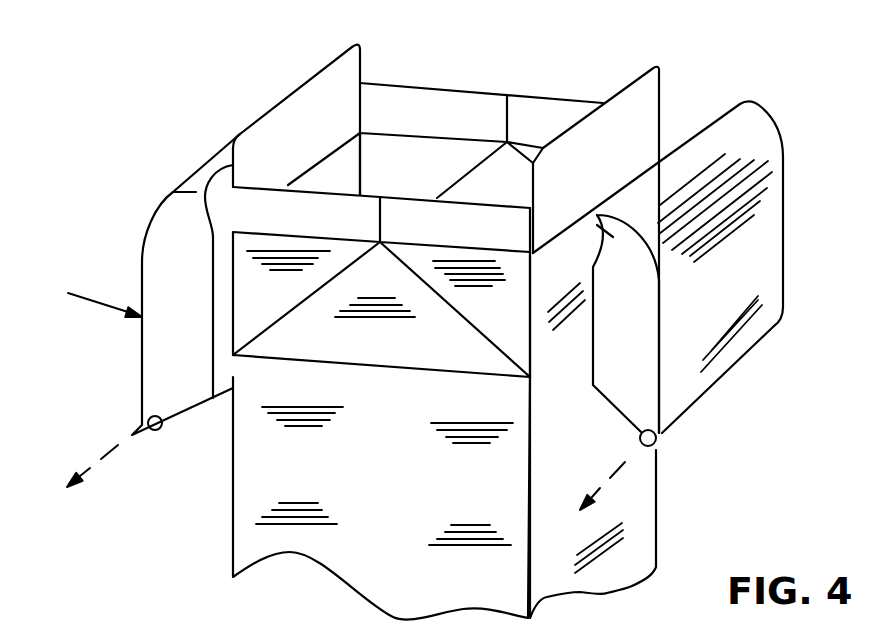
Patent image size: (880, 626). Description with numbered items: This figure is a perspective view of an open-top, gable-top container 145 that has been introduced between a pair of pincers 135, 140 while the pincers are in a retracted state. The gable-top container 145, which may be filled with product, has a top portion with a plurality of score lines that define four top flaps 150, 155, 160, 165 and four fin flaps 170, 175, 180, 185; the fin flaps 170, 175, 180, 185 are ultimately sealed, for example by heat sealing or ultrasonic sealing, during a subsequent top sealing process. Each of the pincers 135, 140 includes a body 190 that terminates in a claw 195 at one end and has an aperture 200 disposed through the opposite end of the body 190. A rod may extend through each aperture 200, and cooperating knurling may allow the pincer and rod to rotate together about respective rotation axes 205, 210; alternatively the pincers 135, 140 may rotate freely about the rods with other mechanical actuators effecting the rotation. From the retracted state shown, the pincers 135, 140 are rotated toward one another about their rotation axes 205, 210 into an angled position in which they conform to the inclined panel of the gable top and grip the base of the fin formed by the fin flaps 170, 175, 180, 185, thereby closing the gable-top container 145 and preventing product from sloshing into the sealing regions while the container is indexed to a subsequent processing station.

The pincer 135 is at (703, 293).
The pincer 140 is at (80, 298).
The gable-top container 145 is at (363, 493).
The top flap 150 is at (356, 361).
The top flap 155 is at (340, 170).
The top flap 160 is at (474, 199).
The top flap 165 is at (547, 347).
The fin flap 170 is at (306, 230).
The fin flap 175 is at (282, 144).
The fin flap 180 is at (470, 127).
The fin flap 185 is at (578, 170).
The body 190 is at (170, 253).
The claw 195 is at (193, 193).
The aperture 200 is at (163, 427).
The rotation axis 205 is at (612, 473).
The rotation axis 210 is at (115, 452).